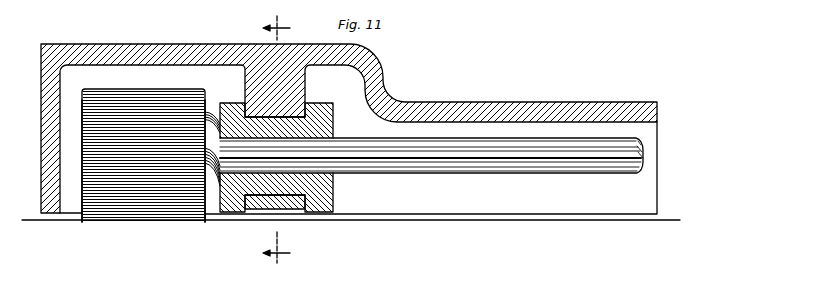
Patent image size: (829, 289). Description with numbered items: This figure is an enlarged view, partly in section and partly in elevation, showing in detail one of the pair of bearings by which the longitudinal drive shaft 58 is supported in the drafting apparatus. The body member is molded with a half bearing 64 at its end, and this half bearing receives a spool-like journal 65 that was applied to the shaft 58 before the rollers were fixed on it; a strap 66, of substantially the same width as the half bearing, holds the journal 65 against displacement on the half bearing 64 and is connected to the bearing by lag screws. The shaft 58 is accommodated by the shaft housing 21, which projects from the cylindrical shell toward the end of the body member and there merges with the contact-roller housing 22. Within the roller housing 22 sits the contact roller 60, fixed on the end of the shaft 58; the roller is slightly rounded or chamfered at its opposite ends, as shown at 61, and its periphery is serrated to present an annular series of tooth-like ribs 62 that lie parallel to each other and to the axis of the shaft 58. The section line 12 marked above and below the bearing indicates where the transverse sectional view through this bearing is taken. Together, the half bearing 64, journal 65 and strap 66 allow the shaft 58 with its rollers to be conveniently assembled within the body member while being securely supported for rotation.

The section line 12— 12 is at (276, 141).
The shaft housing 21 is at (560, 104).
The contact-roller housing 22 is at (137, 55).
The drive shaft 58 is at (541, 173).
The contact roller 60 is at (141, 215).
The rounded or chamfered end 61 is at (83, 222).
The tooth-like ribs 62 is at (135, 100).
The half bearing 64 is at (260, 100).
The spool-like journal 65 is at (335, 196).
The strap 66 is at (259, 205).